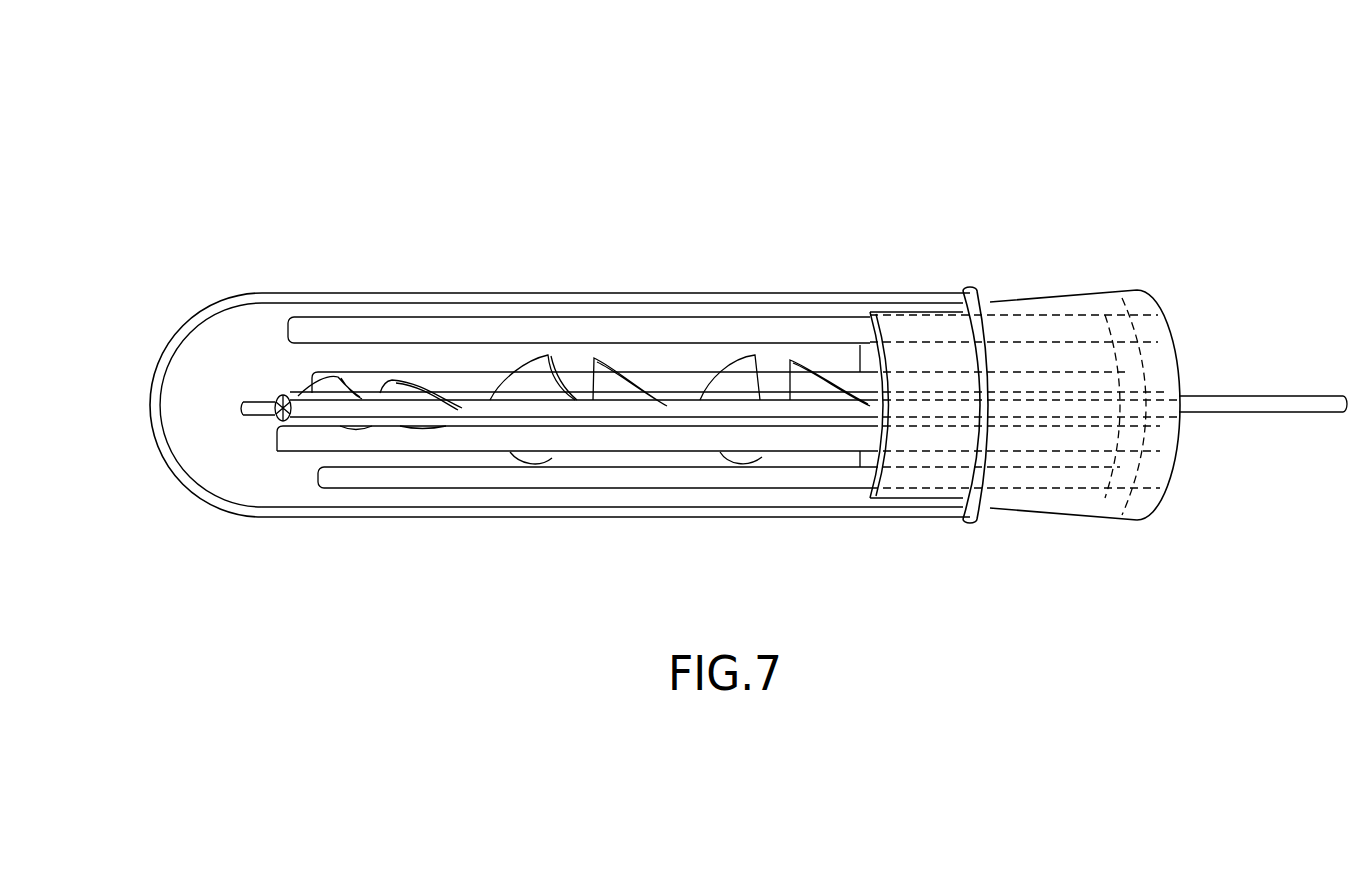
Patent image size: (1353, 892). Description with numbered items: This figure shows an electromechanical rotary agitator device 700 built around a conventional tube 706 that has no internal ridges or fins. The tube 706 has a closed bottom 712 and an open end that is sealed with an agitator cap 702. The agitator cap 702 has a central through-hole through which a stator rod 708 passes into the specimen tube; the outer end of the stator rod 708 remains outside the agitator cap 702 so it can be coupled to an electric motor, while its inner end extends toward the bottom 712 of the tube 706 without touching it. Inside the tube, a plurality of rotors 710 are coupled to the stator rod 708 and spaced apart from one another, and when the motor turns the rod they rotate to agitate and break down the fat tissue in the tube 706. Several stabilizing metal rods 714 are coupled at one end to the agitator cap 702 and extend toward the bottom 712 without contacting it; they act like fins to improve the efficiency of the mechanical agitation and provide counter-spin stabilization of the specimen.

The agitator device 700 is at (222, 128).
The agitator cap 702 is at (1110, 302).
The conventional tube 706 is at (260, 490).
The stator rod 708 is at (1252, 398).
The rotors 710 is at (616, 383).
The bottom of the tube 712 is at (197, 360).
The stabilizing metal rods 714 is at (370, 328).